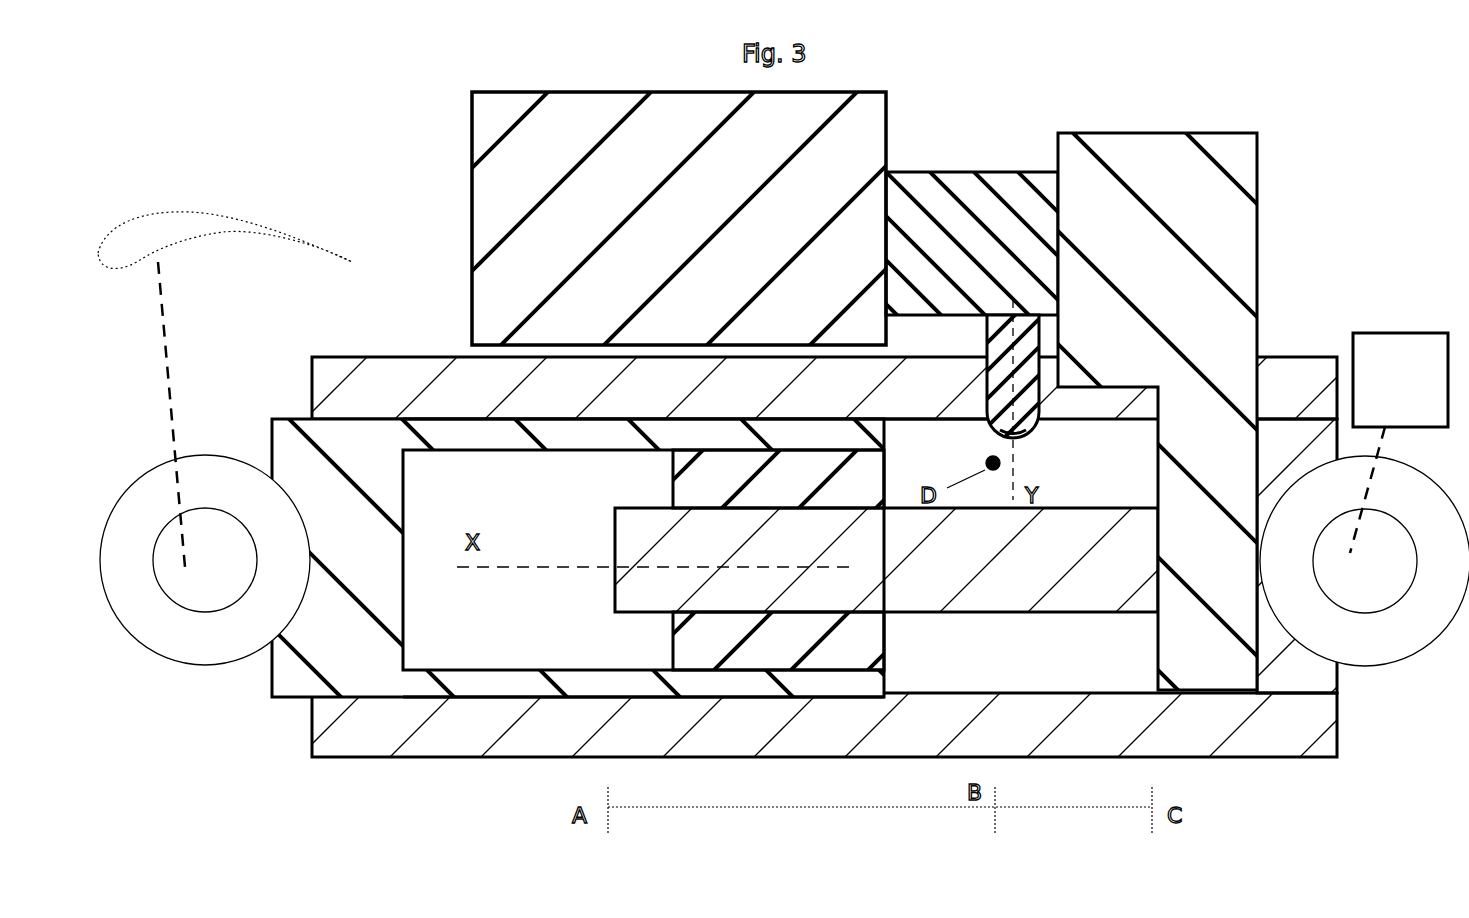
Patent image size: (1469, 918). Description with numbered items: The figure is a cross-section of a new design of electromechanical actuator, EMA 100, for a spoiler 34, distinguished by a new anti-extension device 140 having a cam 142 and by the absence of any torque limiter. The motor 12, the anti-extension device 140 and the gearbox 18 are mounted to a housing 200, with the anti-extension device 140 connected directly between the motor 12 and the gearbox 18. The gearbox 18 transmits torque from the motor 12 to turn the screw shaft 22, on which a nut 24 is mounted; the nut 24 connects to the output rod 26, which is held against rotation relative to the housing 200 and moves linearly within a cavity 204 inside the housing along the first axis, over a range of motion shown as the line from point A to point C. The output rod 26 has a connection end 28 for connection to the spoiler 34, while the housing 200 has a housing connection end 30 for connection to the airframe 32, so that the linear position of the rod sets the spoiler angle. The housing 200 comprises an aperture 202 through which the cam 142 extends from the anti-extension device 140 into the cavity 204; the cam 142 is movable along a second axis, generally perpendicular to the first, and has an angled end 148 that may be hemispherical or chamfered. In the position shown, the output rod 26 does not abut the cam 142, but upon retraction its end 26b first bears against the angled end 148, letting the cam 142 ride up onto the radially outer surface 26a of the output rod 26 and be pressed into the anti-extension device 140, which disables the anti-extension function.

The motor 12 is at (666, 237).
The gearbox 18 is at (1146, 305).
The screw shaft 22 is at (913, 593).
The nut 24 is at (754, 505).
The output rod 26 is at (331, 558).
The radially outer surface 26a is at (300, 418).
The end of the output rod 26b is at (888, 681).
The connection end 28 is at (261, 592).
The housing connection end 30 is at (1351, 648).
The airframe 32 is at (1385, 398).
The spoiler 34 is at (111, 258).
The EMA 100 is at (330, 110).
The anti-extension device 140 is at (948, 217).
The cam 142 is at (1016, 347).
The angled end 148 is at (1028, 445).
The housing 200 is at (840, 412).
The aperture 202 is at (970, 403).
The cavity 204 is at (1080, 685).